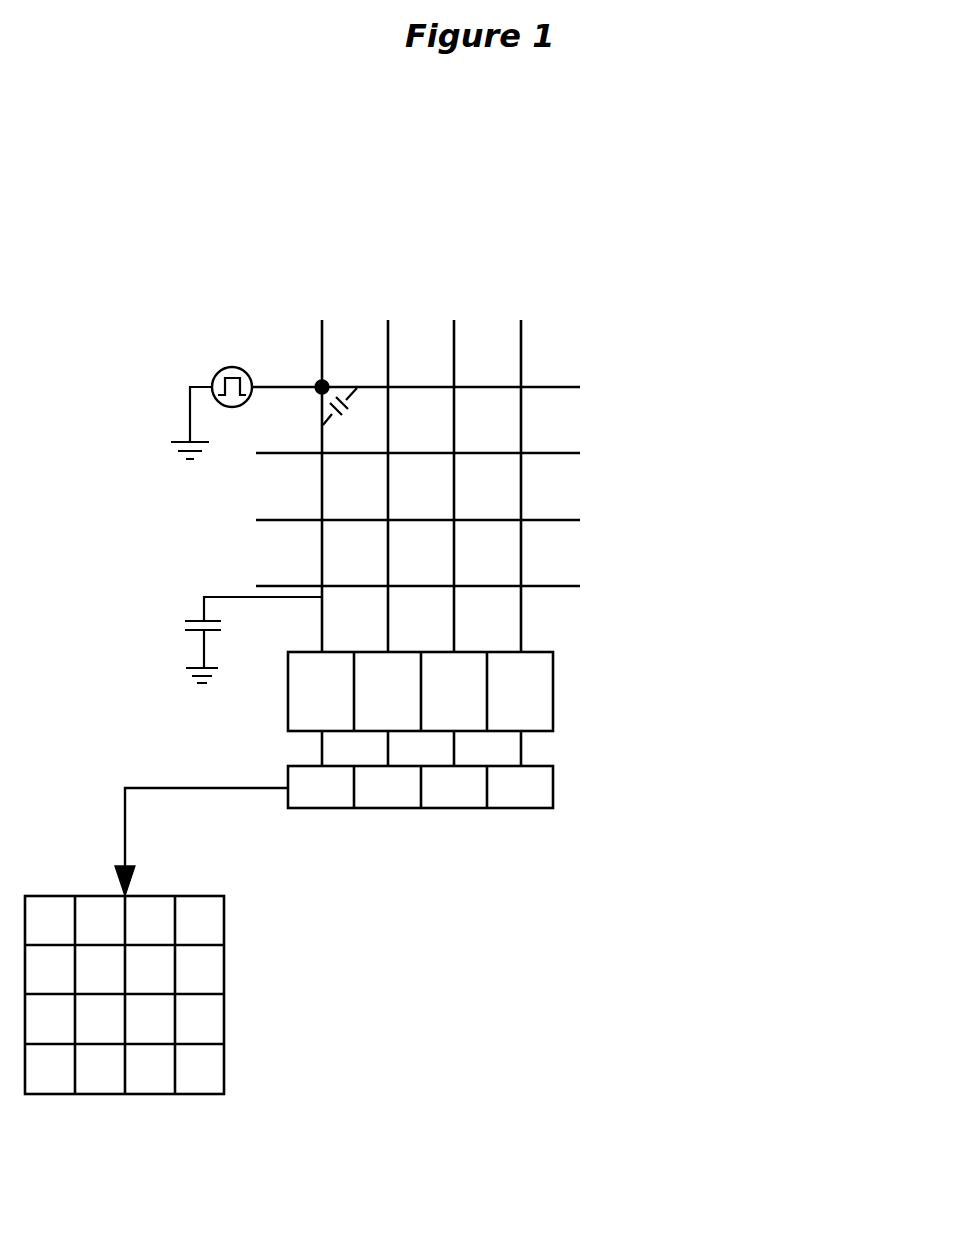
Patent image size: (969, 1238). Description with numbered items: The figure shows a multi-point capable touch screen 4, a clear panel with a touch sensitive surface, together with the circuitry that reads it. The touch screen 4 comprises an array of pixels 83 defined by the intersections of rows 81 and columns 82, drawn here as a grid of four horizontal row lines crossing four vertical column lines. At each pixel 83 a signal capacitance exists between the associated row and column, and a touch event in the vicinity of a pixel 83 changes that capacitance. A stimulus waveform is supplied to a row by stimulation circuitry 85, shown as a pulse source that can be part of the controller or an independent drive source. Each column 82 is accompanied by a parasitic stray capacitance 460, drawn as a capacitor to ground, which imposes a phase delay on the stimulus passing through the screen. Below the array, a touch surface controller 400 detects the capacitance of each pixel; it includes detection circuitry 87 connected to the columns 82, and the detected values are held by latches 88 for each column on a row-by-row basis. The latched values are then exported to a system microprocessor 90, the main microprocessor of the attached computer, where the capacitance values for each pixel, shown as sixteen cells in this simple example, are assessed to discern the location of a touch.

The touch screen 4 is at (758, 634).
The rows 81 is at (616, 596).
The column 82 is at (530, 303).
The pixel 83 is at (316, 390).
The stimulation circuitry 85 is at (255, 373).
The detection circuitry 87 is at (576, 738).
The latches 88 is at (576, 758).
The system microprocessor 90 is at (316, 896).
The touch surface controller 400 is at (758, 822).
The Cstray 460 is at (217, 640).